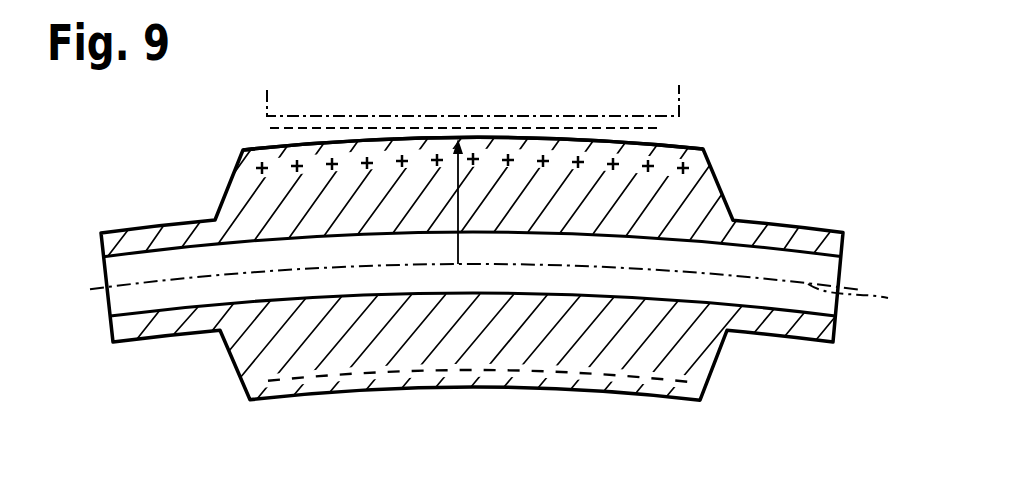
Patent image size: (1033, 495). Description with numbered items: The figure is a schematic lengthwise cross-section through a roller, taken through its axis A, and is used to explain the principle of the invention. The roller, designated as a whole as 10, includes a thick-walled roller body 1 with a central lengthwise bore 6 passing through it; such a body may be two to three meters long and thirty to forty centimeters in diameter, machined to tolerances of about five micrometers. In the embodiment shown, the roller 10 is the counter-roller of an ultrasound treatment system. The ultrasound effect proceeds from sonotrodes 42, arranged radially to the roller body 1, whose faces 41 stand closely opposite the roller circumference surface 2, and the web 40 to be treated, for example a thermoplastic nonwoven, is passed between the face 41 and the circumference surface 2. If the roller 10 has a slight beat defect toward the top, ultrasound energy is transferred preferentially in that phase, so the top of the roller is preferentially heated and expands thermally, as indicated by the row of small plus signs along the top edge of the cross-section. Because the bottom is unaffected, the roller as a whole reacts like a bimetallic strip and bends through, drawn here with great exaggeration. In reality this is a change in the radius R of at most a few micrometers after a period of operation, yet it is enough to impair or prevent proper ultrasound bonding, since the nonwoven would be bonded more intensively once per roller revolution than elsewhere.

The roller body 1 is at (695, 192).
The roller circumference surface 2 is at (675, 147).
The central lengthwise bore 6 is at (768, 305).
The roller 10 is at (505, 217).
The web 40 is at (373, 120).
The face 41 is at (275, 125).
The sonotrode 42 is at (262, 108).
The radius R is at (458, 205).
The axis A is at (505, 287).